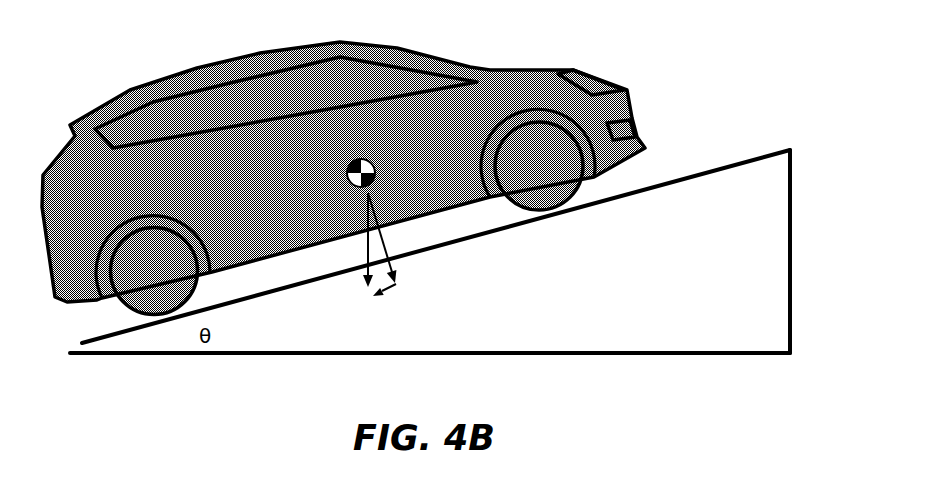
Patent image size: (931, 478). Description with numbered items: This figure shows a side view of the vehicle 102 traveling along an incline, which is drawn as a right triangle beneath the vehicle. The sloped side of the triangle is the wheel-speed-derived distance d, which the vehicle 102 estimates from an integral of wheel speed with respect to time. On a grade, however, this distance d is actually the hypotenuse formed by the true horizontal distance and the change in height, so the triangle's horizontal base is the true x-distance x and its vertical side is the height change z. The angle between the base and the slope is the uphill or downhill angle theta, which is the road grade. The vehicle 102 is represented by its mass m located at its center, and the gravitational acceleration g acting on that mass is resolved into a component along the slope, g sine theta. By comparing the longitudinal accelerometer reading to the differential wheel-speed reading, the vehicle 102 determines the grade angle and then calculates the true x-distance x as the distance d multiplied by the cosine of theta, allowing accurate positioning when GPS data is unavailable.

The vehicle 102 is at (207, 63).
The wheel-speed-derived distance d is at (436, 233).
The height change z is at (809, 251).
The true x-distance x is at (430, 376).
The vehicle mass m is at (377, 173).
The gravitational acceleration g is at (410, 249).